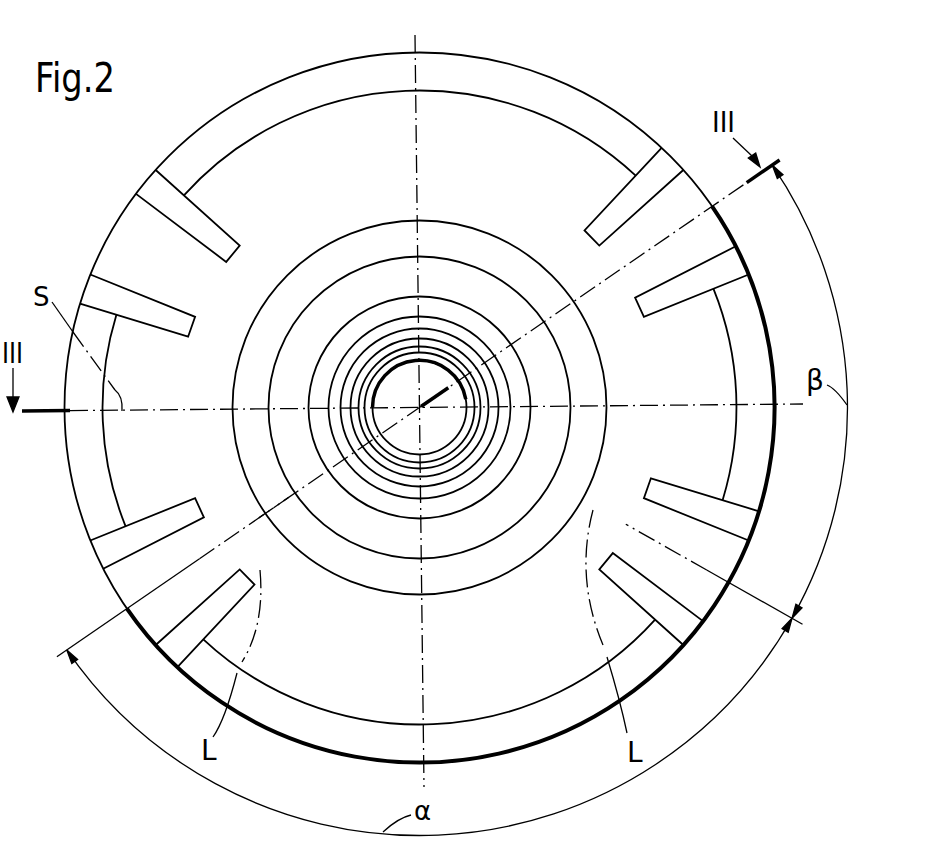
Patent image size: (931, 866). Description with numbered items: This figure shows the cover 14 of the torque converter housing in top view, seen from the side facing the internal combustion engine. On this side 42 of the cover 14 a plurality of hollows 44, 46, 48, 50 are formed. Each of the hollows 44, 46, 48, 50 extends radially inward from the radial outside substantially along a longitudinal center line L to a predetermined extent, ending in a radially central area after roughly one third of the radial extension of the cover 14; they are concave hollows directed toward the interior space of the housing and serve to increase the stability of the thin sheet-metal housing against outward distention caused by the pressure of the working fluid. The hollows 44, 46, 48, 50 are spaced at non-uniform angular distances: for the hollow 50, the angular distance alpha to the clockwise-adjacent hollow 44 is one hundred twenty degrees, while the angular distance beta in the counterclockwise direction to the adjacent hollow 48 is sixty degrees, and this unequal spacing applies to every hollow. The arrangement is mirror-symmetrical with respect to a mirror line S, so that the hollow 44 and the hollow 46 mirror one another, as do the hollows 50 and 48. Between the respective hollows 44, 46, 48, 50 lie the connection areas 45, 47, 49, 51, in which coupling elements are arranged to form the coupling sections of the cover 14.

The cover 14 is at (235, 103).
The side of the cover facing the internal combustion engine 42 is at (533, 115).
The hollow 44 is at (118, 585).
The connection area 45 is at (118, 465).
The hollow 46 is at (125, 233).
The connection area 47 is at (347, 115).
The hollow 48 is at (725, 240).
The connection area 49 is at (710, 325).
The hollow 50 is at (737, 552).
The connection area 51 is at (517, 698).